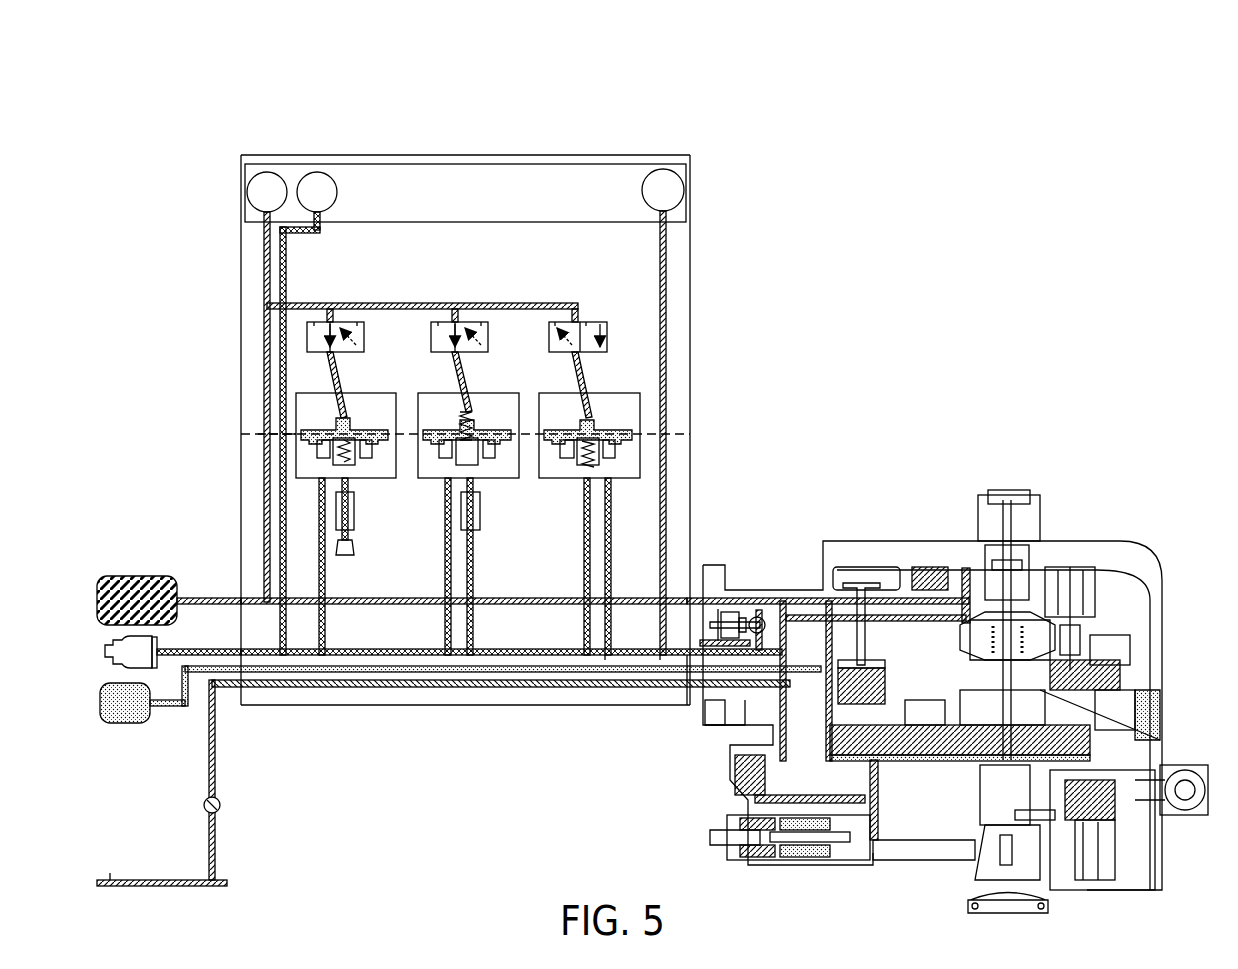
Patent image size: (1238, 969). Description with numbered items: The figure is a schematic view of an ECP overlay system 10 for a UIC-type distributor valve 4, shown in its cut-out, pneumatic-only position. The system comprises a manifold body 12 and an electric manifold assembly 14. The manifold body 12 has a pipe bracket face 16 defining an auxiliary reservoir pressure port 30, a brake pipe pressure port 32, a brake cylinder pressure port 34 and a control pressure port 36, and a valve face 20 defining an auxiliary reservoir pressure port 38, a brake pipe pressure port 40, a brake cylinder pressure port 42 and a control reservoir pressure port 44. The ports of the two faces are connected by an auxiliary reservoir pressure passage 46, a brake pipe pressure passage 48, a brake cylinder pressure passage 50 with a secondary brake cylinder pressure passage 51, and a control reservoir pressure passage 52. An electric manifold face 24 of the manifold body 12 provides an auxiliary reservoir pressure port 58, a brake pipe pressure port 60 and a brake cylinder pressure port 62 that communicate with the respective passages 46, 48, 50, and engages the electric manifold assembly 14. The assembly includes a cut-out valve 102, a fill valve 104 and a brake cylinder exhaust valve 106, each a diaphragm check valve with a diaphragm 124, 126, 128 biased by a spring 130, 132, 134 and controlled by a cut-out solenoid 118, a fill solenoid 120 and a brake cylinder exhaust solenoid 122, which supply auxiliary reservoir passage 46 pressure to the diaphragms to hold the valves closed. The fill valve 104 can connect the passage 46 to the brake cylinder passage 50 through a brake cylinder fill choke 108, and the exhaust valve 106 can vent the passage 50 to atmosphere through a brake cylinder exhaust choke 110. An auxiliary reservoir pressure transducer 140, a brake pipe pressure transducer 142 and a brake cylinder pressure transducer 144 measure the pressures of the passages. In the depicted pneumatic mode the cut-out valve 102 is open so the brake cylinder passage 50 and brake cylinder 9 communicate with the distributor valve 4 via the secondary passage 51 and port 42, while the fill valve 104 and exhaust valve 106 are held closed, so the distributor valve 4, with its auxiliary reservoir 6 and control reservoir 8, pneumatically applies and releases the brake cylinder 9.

The UIC-type distributor valve 4 is at (1135, 548).
The auxiliary reservoir 6 is at (97, 600).
The control reservoir 8 is at (100, 708).
The brake cylinder 9 is at (105, 651).
The ECP overlay system 10 is at (690, 86).
The manifold body 12 is at (470, 706).
The electric manifold assembly 14 is at (691, 330).
The pipe bracket face 16 is at (240, 630).
The valve face 20 is at (735, 620).
The electric manifold face 24 is at (258, 434).
The auxiliary reservoir pressure port 30 is at (240, 590).
The brake pipe pressure port 32 is at (241, 690).
The brake cylinder pressure port 34 is at (240, 650).
The control pressure port 36 is at (209, 680).
The auxiliary reservoir pressure port 38 is at (690, 598).
The brake pipe pressure port 40 is at (690, 705).
The brake cylinder pressure port 42 is at (688, 650).
The control reservoir pressure port 44 is at (662, 688).
The auxiliary reservoir pressure passage 46 is at (400, 605).
The brake pipe pressure passage 48 is at (418, 688).
The brake cylinder pressure passage 50 is at (282, 405).
The secondary brake cylinder pressure passage 51 is at (596, 672).
The control reservoir pressure passage 52 is at (540, 675).
The auxiliary reservoir pressure port 58 is at (264, 424).
The brake pipe pressure port 60 is at (667, 430).
The brake cylinder pressure port 62 is at (284, 447).
The cut-out valve 102 is at (640, 450).
The fill valve 104 is at (492, 478).
The brake cylinder exhaust valve 106 is at (372, 478).
The brake cylinder fill choke 108 is at (481, 508).
The brake cylinder exhaust choke 110 is at (350, 548).
The cut-out solenoid 118 is at (608, 348).
The fill solenoid 120 is at (488, 336).
The brake cylinder exhaust solenoid 122 is at (364, 336).
The diaphragm 124 is at (630, 428).
The diaphragm 126 is at (510, 428).
The diaphragm 128 is at (348, 416).
The spring 130 is at (580, 470).
The spring 132 is at (462, 418).
The spring 134 is at (354, 498).
The auxiliary reservoir pressure transducer 140 is at (246, 182).
The brake pipe pressure transducer 142 is at (686, 190).
The brake cylinder pressure transducer 144 is at (336, 180).